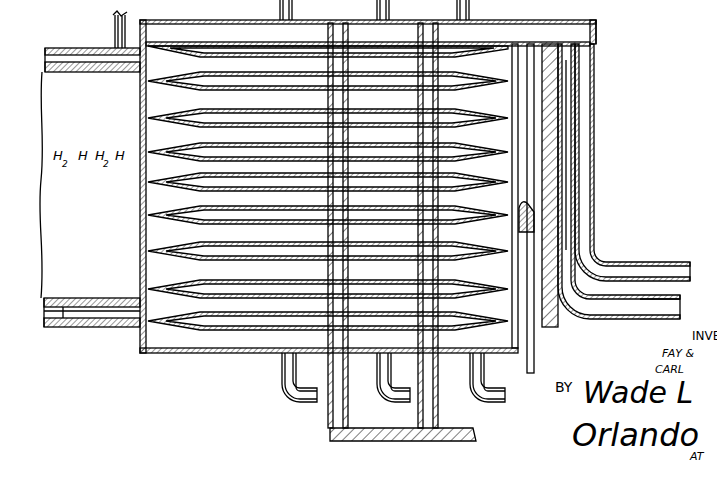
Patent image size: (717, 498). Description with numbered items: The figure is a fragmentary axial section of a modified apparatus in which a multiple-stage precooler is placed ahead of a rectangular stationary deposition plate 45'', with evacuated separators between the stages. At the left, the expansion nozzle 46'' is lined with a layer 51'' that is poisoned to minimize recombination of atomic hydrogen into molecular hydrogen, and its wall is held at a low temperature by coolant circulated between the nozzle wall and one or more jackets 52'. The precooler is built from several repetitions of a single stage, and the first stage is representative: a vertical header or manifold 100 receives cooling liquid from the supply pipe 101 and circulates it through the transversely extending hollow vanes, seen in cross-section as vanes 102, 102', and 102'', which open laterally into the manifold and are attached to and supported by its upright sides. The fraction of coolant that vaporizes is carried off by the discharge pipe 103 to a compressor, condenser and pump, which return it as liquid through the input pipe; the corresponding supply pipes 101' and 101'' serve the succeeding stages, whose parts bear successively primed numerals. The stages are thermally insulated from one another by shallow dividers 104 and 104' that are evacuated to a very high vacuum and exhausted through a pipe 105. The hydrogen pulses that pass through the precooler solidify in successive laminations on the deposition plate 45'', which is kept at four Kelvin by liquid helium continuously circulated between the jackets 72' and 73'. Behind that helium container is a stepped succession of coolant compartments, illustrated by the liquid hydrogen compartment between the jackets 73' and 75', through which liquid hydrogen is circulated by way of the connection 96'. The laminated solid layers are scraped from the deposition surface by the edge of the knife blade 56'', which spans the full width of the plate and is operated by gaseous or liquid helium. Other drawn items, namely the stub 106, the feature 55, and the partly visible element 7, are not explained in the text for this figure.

The vertical header or manifold 100 is at (208, 20).
The supply pipe 101 is at (275, 377).
The supply pipe 101' is at (382, 386).
The supply pipe 101'' is at (495, 377).
The hollow vane 102 is at (328, 90).
The hollow vane 102' is at (328, 110).
The hollow vane 102'' is at (328, 144).
The discharge pipe 103 is at (280, 2).
The shallow evacuated divider 104 is at (352, 16).
The shallow evacuated divider 104' is at (409, 225).
The exhaust pipe 105 is at (447, 423).
The inlet tube 106 is at (407, 18).
The stationary deposition plate 45'' is at (590, 185).
The expansion nozzle 46'' is at (90, 344).
The poisoned lining layer 51'' is at (92, 293).
The jacket 52' is at (92, 44).
The weld 55 is at (535, 203).
The knife blade 56'' is at (554, 208).
The jacket 72' is at (597, 155).
The jacket 73' is at (625, 181).
The jacket 75' is at (619, 181).
The connection 96' is at (632, 150).
The pipe 7 is at (663, 293).